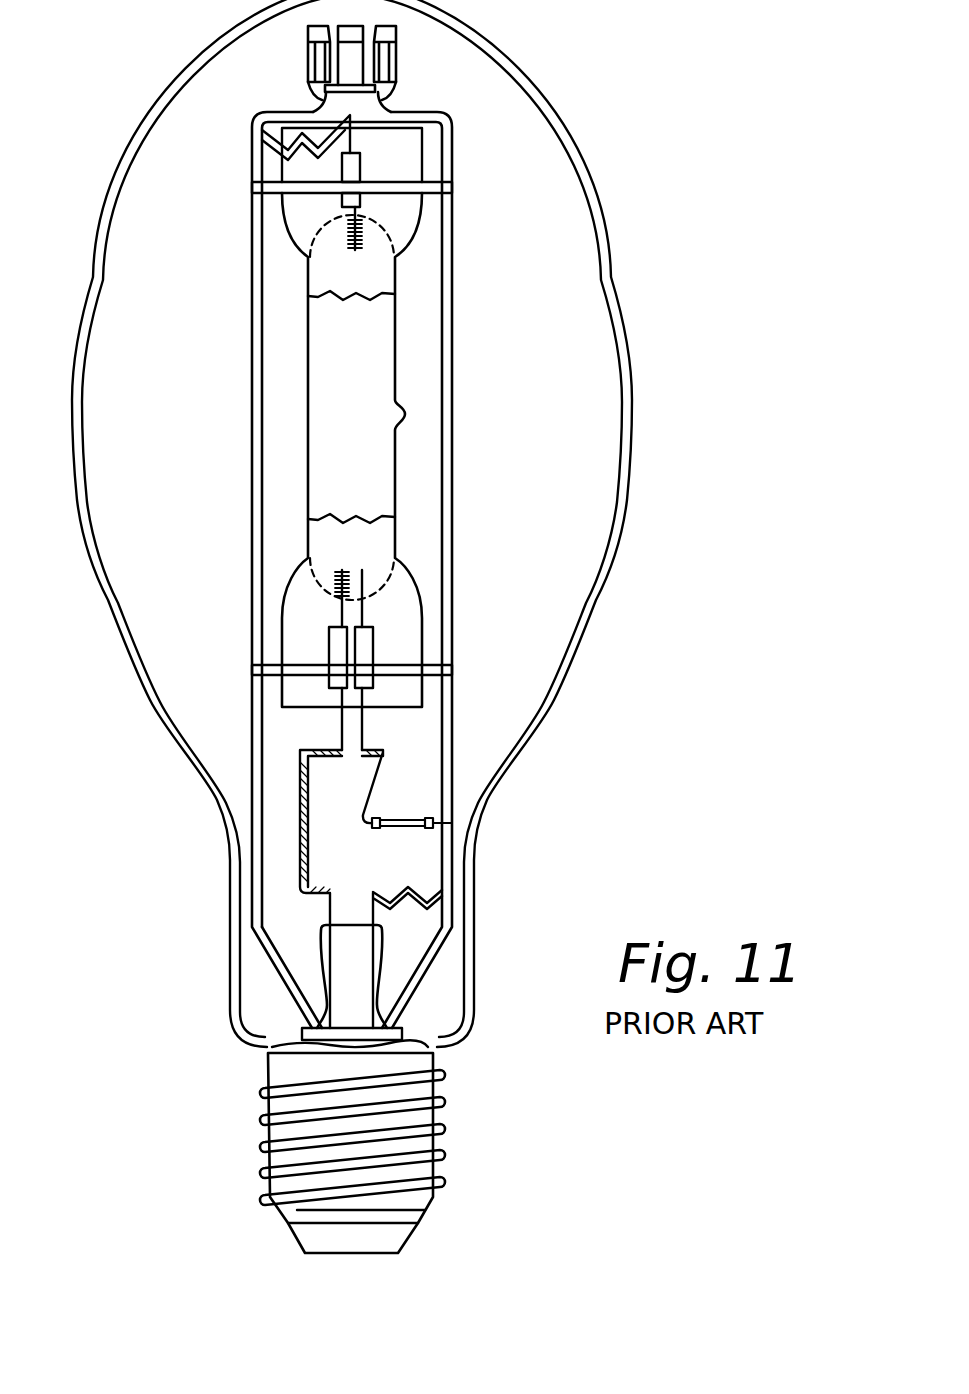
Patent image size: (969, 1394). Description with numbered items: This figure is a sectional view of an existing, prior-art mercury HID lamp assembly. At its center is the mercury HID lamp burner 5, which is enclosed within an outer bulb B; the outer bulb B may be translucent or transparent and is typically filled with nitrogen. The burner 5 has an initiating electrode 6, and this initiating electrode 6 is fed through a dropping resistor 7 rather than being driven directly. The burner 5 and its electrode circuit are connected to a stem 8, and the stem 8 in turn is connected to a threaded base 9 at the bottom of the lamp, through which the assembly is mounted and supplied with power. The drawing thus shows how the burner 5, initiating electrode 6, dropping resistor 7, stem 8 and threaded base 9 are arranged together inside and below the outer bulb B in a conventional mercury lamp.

The outer bulb B is at (631, 425).
The mercury HID lamp burner 5 is at (230, 336).
The initiating electrode 6 is at (378, 742).
The dropping resistor 7 is at (400, 830).
The stem 8 is at (320, 935).
The threaded base 9 is at (262, 1173).